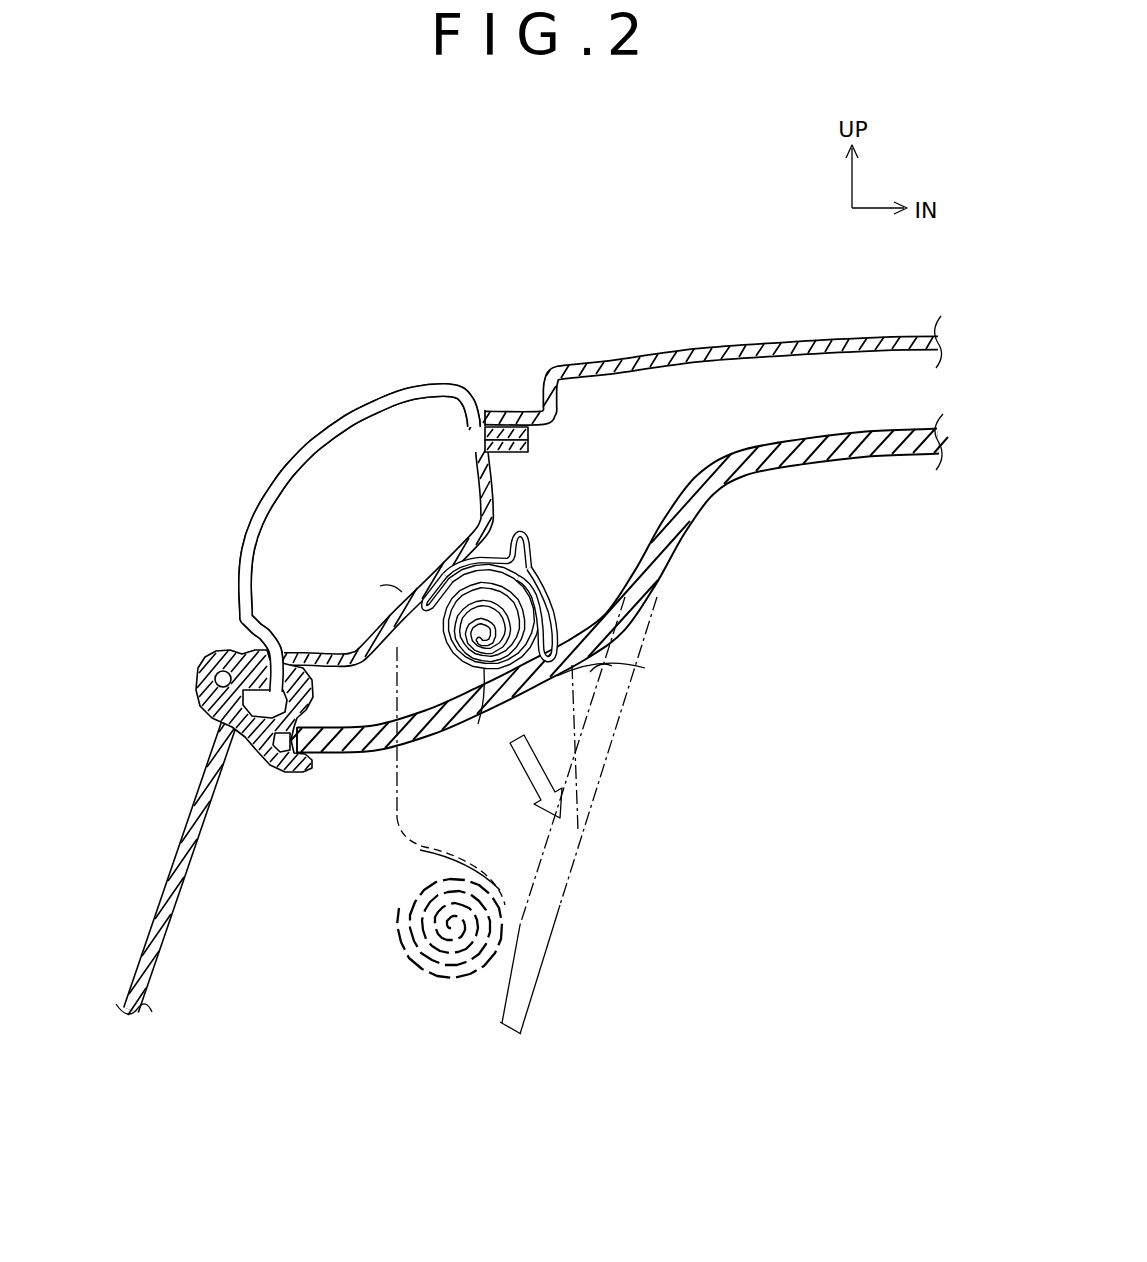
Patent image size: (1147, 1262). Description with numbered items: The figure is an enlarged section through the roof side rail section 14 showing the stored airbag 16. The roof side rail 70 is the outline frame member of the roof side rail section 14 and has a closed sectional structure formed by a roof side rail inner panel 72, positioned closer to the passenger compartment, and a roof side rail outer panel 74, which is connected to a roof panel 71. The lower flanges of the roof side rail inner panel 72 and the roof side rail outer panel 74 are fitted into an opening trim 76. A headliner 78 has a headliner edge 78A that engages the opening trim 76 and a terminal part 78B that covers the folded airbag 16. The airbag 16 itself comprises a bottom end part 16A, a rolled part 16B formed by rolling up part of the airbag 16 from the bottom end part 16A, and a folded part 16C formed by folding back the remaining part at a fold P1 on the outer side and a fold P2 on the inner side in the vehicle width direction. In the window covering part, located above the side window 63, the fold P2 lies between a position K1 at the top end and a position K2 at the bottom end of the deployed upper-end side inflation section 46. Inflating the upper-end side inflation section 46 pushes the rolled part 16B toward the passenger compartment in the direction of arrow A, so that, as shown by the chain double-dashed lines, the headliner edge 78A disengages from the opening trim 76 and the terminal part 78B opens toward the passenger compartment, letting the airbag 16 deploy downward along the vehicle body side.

The roof side rail section 14 is at (341, 515).
The airbag 16 is at (497, 739).
The bottom end part 16A is at (474, 737).
The rolled part 16B is at (481, 641).
The folded part 16C is at (552, 578).
The upper-end side inflation section 46 is at (460, 538).
The side window 63 is at (152, 908).
The roof side rail 70 is at (284, 476).
The roof panel 71 is at (763, 341).
The roof side rail inner panel 72 is at (366, 661).
The roof side rail outer panel 74 is at (240, 578).
The opening trim 76 is at (210, 717).
The headliner 78 is at (605, 769).
The headliner edge 78A is at (285, 760).
The terminal part 78B is at (567, 668).
The position K1 is at (527, 555).
The position K2 is at (452, 572).
The fold P1 is at (405, 592).
The fold P2 is at (640, 670).
The arrow A is at (530, 790).